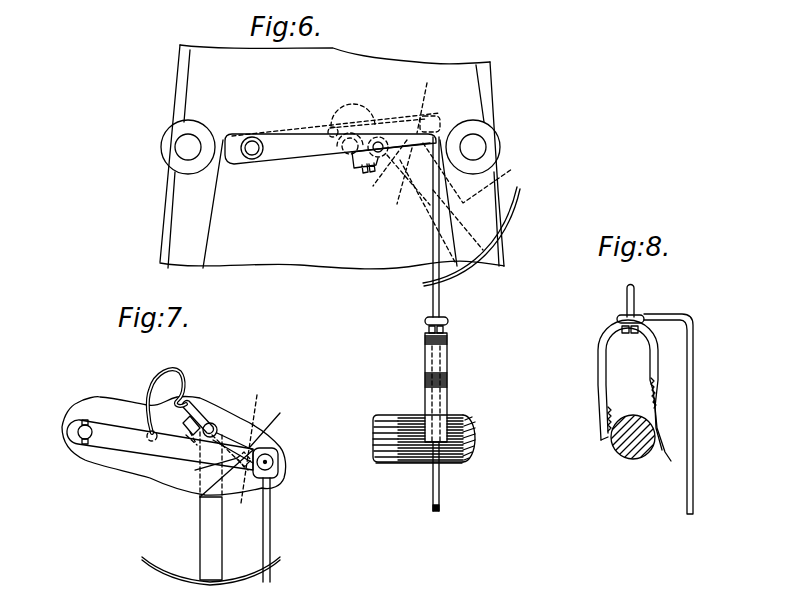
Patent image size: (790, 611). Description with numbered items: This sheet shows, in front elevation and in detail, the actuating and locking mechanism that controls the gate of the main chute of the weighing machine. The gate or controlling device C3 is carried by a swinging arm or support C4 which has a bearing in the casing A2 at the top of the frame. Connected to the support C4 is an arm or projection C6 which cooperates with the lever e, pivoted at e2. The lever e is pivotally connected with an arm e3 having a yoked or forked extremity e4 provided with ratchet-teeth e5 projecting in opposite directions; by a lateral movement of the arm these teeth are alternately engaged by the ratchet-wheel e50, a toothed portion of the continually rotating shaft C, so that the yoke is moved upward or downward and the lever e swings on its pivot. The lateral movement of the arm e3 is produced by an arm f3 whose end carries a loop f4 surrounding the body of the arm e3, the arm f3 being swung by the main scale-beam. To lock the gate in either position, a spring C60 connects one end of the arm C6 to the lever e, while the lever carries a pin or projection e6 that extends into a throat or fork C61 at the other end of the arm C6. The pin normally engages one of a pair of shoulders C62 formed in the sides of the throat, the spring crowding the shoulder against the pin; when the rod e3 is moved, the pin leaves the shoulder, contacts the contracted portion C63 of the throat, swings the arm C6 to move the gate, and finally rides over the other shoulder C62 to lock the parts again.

In FIG. 6, the casing A2 is at (522, 87).
In FIG. 6, the lever e is at (302, 153).
In FIG. 7, the lever e is at (133, 457).
In FIG. 6, the pivot e2 is at (251, 140).
In FIG. 7, the pivot e2 is at (80, 433).
In FIG. 6, the arm e3 is at (441, 291).
In FIG. 7, the arm e3 is at (271, 513).
In FIG. 8, the arm e3 is at (626, 292).
In FIG. 6, the yoked or forked extremity e4 is at (447, 371).
In FIG. 8, the yoked or forked extremity e4 is at (598, 362).
In FIG. 8, the ratchet-teeth e5 is at (607, 420).
In FIG. 6, the pin or projection e6 is at (420, 127).
In FIG. 7, the pin or projection e6 is at (230, 459).
In FIG. 6, the ratchet-wheel e50 is at (413, 462).
In FIG. 8, the ratchet-wheel e50 is at (628, 454).
In FIG. 6, the arm f3 is at (442, 479).
In FIG. 8, the arm f3 is at (693, 420).
In FIG. 6, the loop f4 is at (449, 322).
In FIG. 8, the loop f4 is at (637, 317).
In FIG. 6, the shaft C is at (377, 461).
In FIG. 6, the curved guide C3 is at (517, 190).
In FIG. 7, the curved guide C3 is at (247, 574).
In FIG. 6, the chute C4 is at (466, 202).
In FIG. 7, the chute C4 is at (200, 534).
In FIG. 6, the lever C6 is at (392, 130).
In FIG. 7, the lever C6 is at (203, 405).
In FIG. 6, the spring hook C60 is at (358, 110).
In FIG. 7, the spring hook C60 is at (180, 360).
In FIG. 6, the latch boss C61 is at (440, 117).
In FIG. 7, the latch boss C61 is at (278, 438).
In FIG. 6, the guide lines C62 is at (409, 138).
In FIG. 7, the guide lines C62 is at (218, 444).
In FIG. 6, the latch C63 is at (376, 173).
In FIG. 7, the latch C63 is at (206, 451).